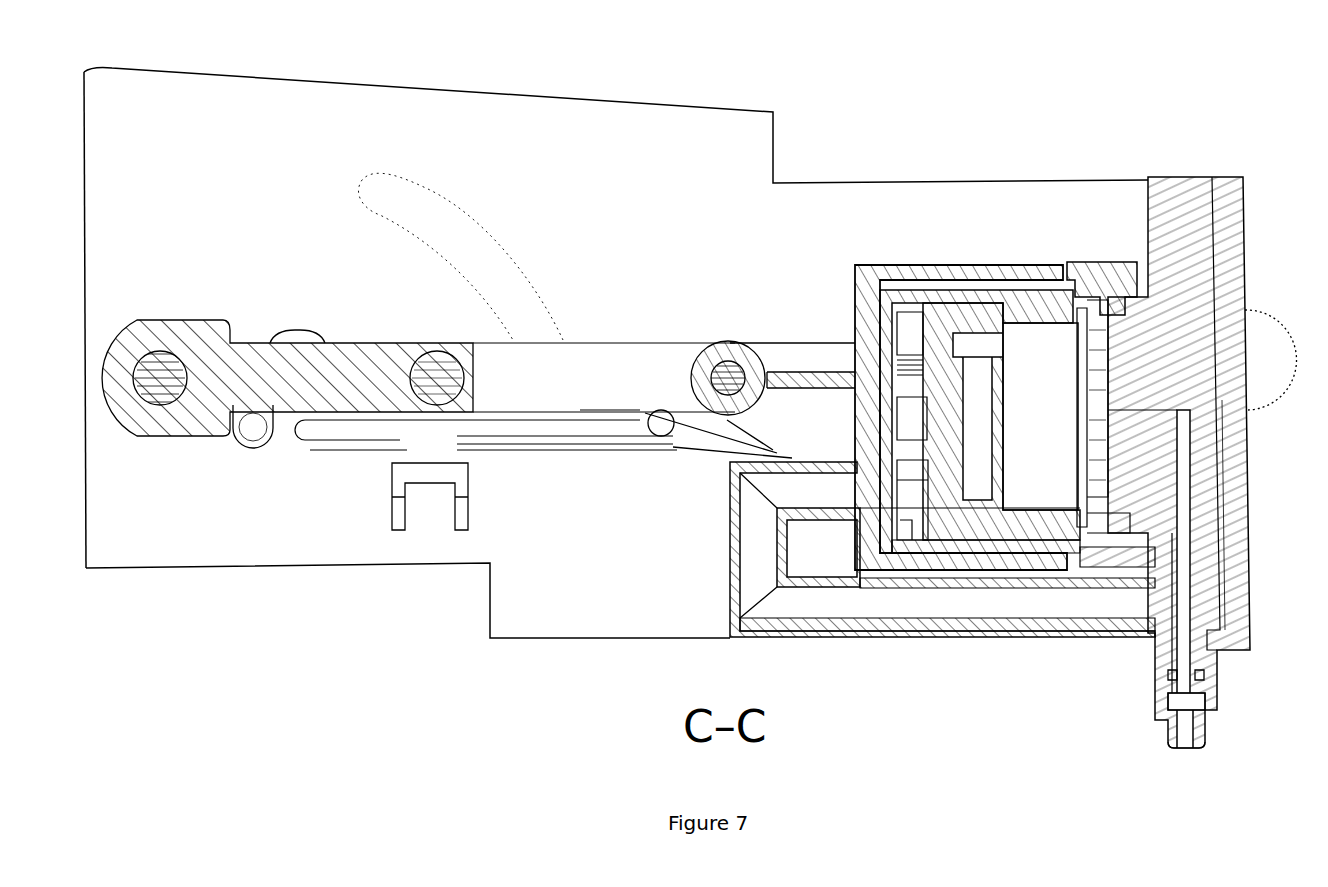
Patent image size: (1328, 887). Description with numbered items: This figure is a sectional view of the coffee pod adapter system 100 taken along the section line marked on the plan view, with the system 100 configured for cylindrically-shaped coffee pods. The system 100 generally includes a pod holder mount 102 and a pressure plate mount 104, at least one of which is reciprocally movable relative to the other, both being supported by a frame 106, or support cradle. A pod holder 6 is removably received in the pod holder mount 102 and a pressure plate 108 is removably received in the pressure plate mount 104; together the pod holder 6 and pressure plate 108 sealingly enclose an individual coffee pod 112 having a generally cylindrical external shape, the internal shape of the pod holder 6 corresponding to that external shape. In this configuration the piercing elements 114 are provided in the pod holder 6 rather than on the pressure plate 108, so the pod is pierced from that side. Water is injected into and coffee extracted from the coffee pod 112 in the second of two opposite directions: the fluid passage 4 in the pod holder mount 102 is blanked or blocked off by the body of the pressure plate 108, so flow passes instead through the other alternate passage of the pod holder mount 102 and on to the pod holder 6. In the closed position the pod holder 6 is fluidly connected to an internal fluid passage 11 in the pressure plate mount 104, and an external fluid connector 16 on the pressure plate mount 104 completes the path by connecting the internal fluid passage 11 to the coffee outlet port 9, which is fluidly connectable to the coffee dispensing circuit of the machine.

The coffee pod adapter system 100 is at (872, 66).
The pod holder mount 102 is at (955, 262).
The pressure plate mount 104 is at (1250, 525).
The frame 106 is at (488, 598).
The pressure plate 108 is at (1165, 178).
The coffee pod 112 is at (1052, 411).
The piercing elements 114 is at (978, 413).
The internal fluid passage 11 is at (1085, 420).
The external fluid connector 16 is at (1200, 695).
The fluid passage 4 is at (1022, 604).
The pod holder 6 is at (1085, 262).
The coffee outlet port 9 is at (1205, 732).